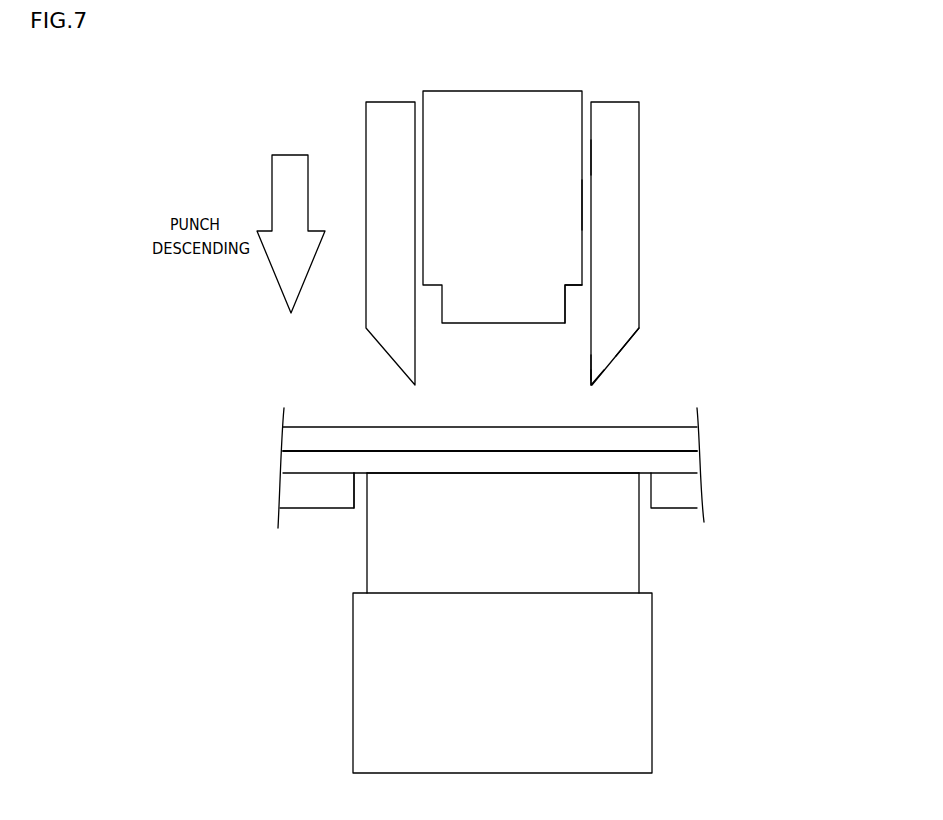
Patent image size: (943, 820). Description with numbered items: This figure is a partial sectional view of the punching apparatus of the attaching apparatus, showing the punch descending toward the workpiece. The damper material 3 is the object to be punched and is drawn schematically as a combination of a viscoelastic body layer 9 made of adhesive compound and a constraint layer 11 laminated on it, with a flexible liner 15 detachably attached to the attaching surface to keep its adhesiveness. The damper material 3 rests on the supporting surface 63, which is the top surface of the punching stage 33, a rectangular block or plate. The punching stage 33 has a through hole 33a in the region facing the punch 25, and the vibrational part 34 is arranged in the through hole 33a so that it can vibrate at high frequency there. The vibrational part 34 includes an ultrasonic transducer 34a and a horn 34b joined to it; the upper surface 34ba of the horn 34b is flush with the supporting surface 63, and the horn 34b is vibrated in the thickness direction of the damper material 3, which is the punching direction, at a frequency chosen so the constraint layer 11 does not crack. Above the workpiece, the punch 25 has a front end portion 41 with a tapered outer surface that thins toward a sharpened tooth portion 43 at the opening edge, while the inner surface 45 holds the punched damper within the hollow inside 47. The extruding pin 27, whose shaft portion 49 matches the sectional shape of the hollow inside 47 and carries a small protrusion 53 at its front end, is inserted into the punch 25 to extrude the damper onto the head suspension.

The extruding pin 27 is at (532, 125).
The punch 25 is at (612, 122).
The hollow inside 47 is at (586, 174).
The shaft portion 49 is at (582, 205).
The small protrusion 53 is at (566, 309).
The front end portion 41 is at (628, 342).
The tooth portion 43 is at (594, 386).
The inner surface 45 is at (590, 366).
The damper material 3 is at (544, 468).
The viscoelastic body layer 9 is at (491, 468).
The constraint layer 11 is at (683, 442).
The liner 15 is at (304, 463).
The supporting surface 63 is at (338, 472).
The upper surface 34ba is at (462, 473).
The punching stage 33 is at (291, 498).
The through hole 33a is at (356, 490).
The vibrational part 34 is at (510, 623).
The horn 34b is at (632, 563).
The ultrasonic transducer 34a is at (378, 684).